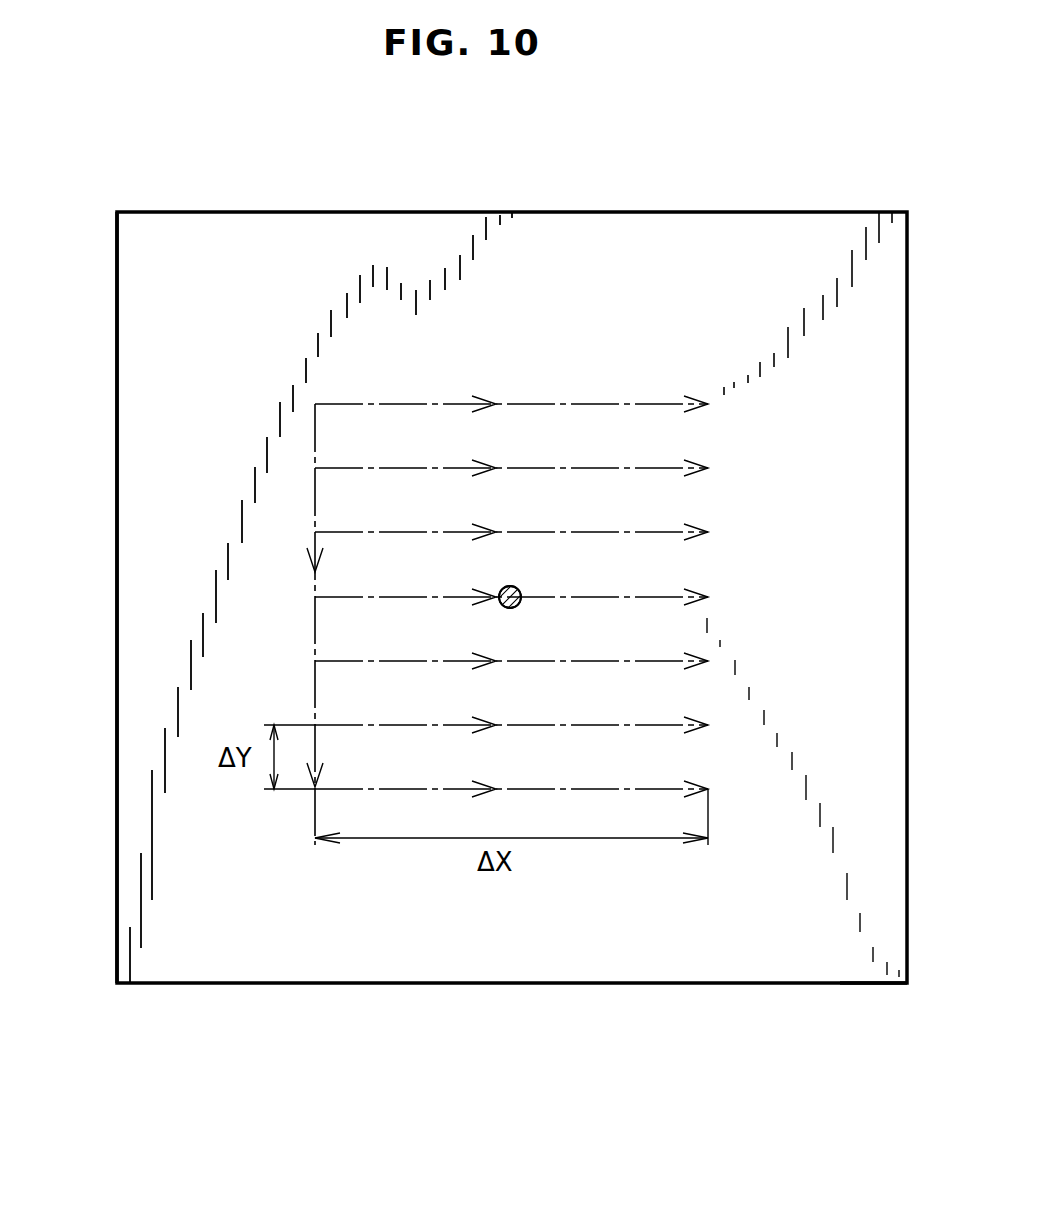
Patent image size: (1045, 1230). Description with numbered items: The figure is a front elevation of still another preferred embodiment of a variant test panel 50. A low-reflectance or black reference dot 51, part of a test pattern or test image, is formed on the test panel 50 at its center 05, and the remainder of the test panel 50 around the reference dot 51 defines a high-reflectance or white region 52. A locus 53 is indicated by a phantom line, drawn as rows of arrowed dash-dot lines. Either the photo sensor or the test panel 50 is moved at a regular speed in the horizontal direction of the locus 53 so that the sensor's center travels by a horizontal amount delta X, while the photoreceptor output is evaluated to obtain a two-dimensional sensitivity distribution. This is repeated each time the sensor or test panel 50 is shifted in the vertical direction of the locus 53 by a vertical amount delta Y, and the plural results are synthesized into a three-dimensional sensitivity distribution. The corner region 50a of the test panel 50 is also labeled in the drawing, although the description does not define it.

The test panel 50 is at (700, 212).
The corner of substrate 50a is at (858, 955).
The low-reflectance reference dot 51 is at (520, 588).
The high-reflectance region 52 is at (133, 283).
The locus 53 is at (576, 404).
The center 05 is at (518, 606).